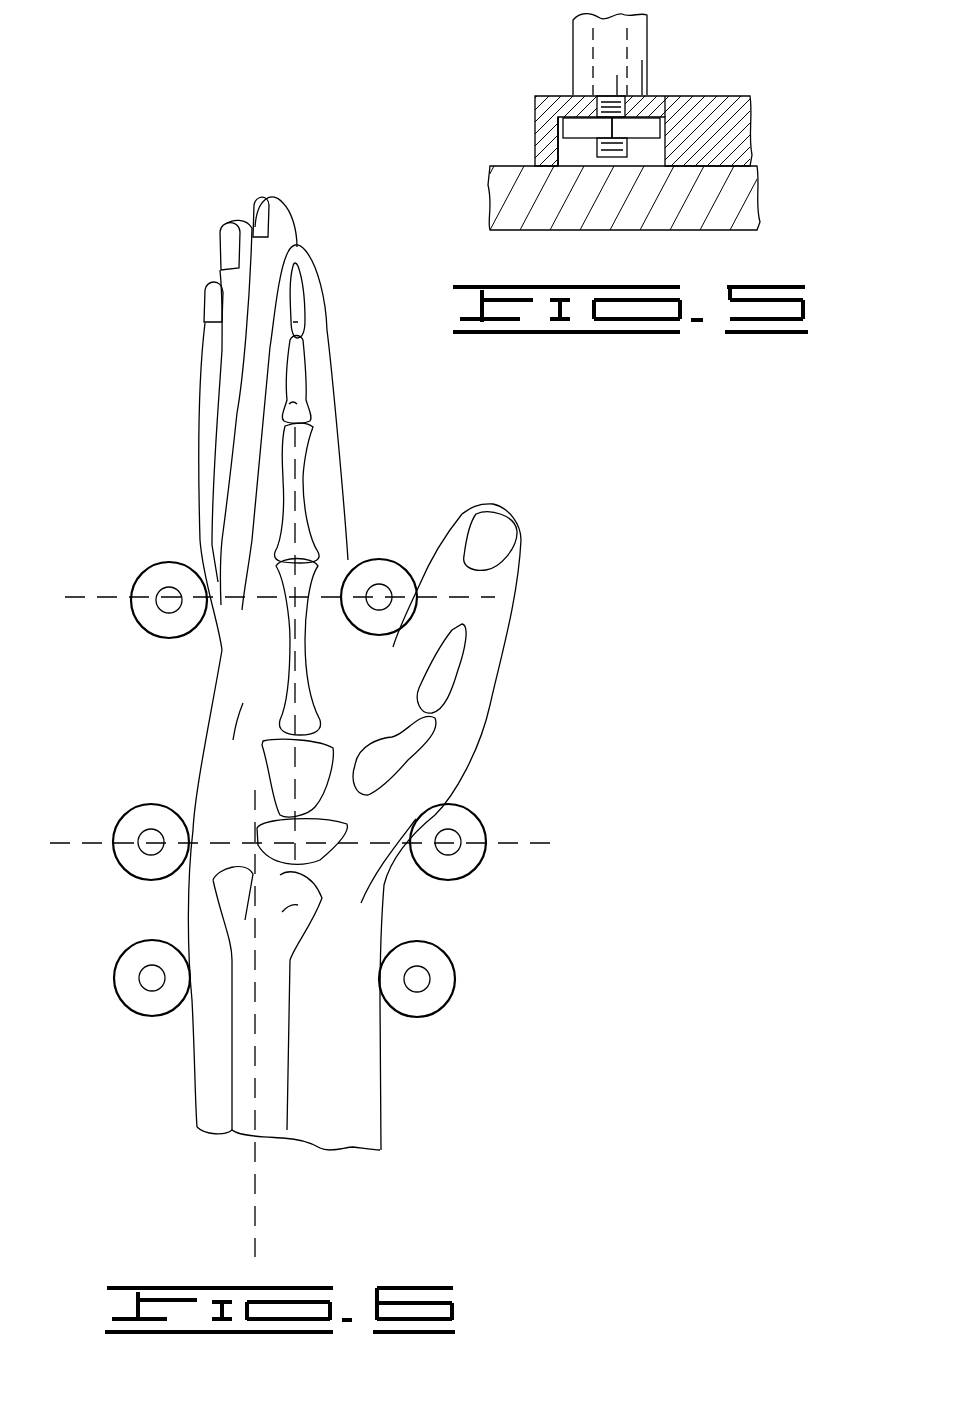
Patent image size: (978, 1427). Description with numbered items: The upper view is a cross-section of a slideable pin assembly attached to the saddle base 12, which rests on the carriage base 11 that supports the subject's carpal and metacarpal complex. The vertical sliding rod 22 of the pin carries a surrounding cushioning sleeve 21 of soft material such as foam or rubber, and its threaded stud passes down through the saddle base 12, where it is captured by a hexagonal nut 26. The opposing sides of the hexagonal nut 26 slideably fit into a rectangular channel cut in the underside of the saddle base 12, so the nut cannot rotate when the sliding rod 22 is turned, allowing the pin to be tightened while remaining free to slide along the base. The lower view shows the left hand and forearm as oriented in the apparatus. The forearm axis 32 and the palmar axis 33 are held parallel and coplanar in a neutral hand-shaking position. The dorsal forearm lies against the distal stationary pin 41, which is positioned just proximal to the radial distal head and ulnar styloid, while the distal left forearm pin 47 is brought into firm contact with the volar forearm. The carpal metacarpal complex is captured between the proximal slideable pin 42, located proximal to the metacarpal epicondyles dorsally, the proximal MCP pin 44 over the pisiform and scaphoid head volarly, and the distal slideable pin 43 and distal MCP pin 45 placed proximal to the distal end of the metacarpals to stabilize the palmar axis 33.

In FIG. 5, the carriage base 11 is at (742, 200).
In FIG. 5, the saddle base 12 is at (717, 100).
In FIG. 5, the cushioning sleeve 21 is at (647, 33).
In FIG. 5, the vertical sliding rod 22 is at (600, 155).
In FIG. 5, the hexagonal nut 26 is at (578, 127).
In FIG. 6, the forearm axis 32 is at (253, 1208).
In FIG. 6, the palmar axis 33 is at (290, 667).
In FIG. 6, the distal stationary pin 41 is at (130, 946).
In FIG. 6, the proximal slideable pin 42 is at (150, 807).
In FIG. 6, the distal slideable pin 43 is at (167, 563).
In FIG. 6, the proximal MCP pin 44 is at (474, 806).
In FIG. 6, the distal MCP pin 45 is at (382, 556).
In FIG. 6, the distal left forearm pin 47 is at (453, 953).